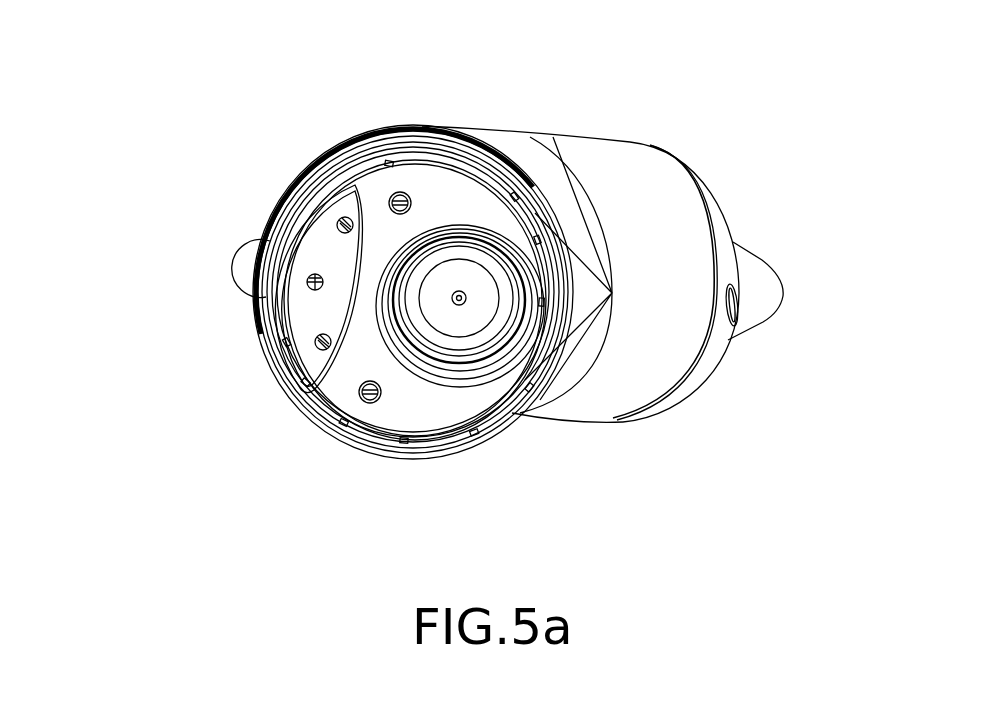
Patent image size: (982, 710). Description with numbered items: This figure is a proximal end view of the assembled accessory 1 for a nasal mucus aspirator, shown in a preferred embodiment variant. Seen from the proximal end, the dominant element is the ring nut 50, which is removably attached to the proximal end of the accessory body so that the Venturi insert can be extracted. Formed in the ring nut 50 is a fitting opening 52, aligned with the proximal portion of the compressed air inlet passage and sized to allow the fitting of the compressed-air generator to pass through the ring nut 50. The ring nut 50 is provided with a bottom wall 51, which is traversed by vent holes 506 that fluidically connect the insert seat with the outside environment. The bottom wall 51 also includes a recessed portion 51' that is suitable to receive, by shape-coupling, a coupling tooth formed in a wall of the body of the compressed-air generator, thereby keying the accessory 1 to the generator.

The accessory for a nasal mucus aspirator 1 is at (707, 82).
The ring nut 50 is at (250, 313).
The bottom wall 51 is at (414, 352).
The recessed portion 51' is at (240, 292).
The fitting opening 52 is at (387, 347).
The vent holes 506 is at (313, 274).